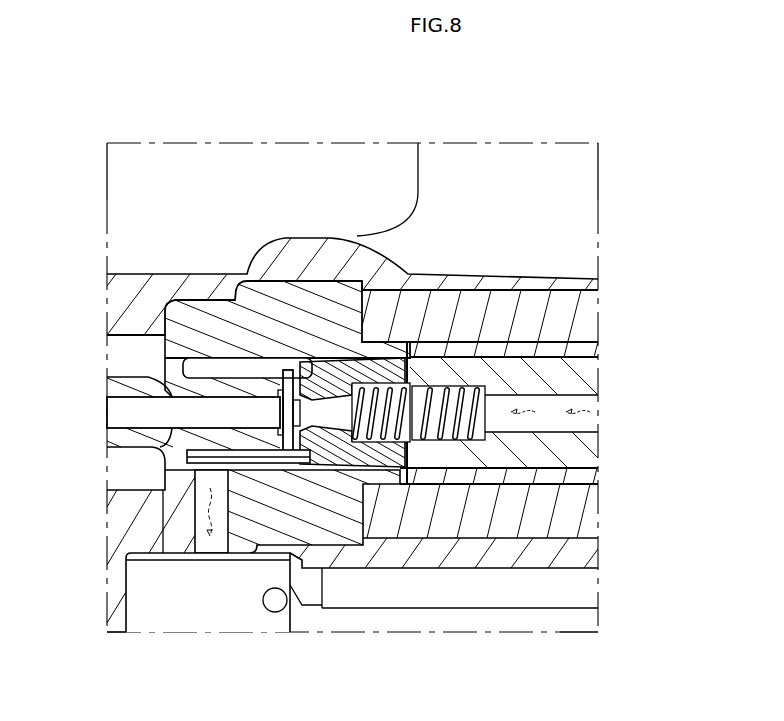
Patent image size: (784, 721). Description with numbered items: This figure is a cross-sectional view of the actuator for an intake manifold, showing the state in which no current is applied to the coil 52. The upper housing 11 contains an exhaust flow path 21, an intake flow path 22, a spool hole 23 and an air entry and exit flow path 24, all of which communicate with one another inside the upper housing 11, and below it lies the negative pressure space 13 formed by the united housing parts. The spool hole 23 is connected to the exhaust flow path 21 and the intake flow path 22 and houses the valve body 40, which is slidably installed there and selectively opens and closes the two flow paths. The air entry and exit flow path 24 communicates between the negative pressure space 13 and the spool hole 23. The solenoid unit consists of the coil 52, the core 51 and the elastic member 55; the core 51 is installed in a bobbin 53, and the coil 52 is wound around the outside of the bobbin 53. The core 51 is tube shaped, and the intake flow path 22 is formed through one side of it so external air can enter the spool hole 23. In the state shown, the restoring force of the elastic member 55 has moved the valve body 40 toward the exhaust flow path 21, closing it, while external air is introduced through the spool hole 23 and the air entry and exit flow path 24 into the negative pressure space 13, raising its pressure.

The valve body 40 is at (265, 281).
The upper housing 11 is at (140, 278).
The coil 52 is at (548, 282).
The core 51 is at (575, 360).
The intake flow path 22 is at (545, 420).
The bobbin 53 is at (352, 356).
The elastic member 55 is at (462, 412).
The exhaust flow path 21 is at (183, 403).
The spool hole 23 is at (305, 365).
The air entry and exit flow path 24 is at (200, 502).
The negative pressure space 13 is at (211, 604).